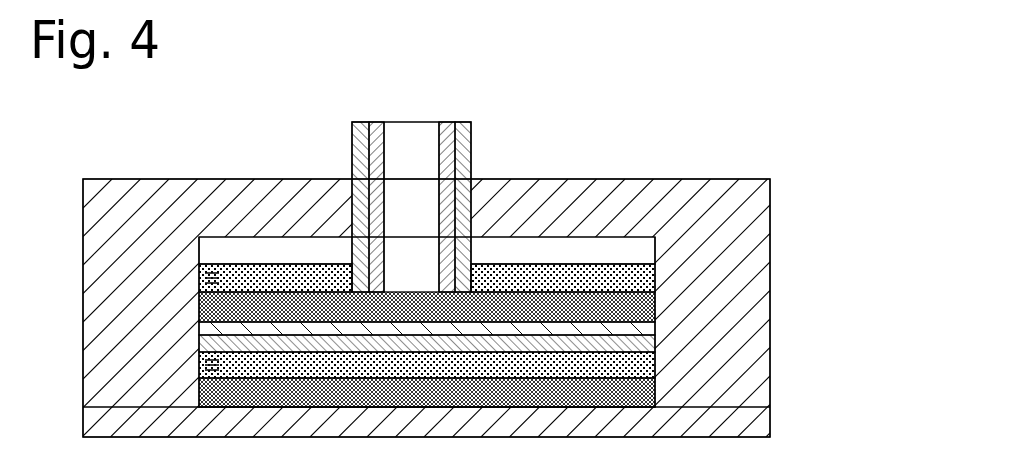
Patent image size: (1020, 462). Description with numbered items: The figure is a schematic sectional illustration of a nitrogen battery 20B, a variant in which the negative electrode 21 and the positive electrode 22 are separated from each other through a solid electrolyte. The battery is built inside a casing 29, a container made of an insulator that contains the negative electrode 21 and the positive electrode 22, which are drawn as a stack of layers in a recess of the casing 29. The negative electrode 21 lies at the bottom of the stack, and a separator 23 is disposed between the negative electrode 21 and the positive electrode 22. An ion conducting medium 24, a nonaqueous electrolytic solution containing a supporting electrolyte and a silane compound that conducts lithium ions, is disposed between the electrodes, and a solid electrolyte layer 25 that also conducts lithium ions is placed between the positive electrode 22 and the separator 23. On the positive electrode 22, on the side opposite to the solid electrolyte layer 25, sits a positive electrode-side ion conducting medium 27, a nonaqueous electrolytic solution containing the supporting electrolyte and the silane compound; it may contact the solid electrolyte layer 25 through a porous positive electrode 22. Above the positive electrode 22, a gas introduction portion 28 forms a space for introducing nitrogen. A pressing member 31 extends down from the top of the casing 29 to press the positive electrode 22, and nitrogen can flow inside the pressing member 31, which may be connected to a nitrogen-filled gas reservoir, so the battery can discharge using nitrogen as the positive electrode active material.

The nitrogen battery 20B is at (822, 130).
The negative electrode 21 is at (655, 388).
The positive electrode 22 is at (655, 301).
The separator 23 is at (655, 338).
The ion conducting medium 24 is at (655, 355).
The solid electrolyte layer 25 is at (655, 326).
The positive electrode-side ion conducting medium 27 is at (627, 282).
The gas introduction portion 28 is at (627, 247).
The casing 29 is at (770, 190).
The pressing member 31 is at (472, 165).